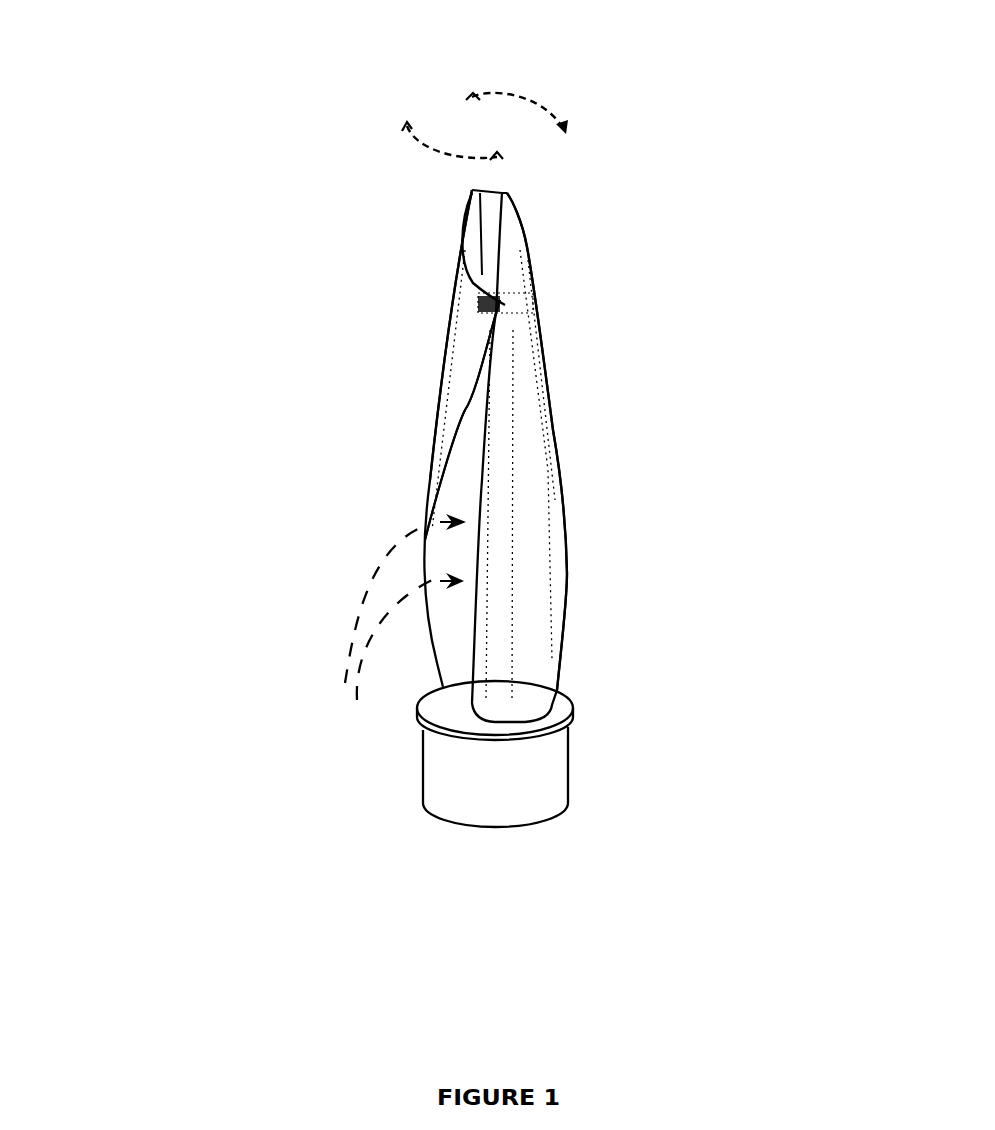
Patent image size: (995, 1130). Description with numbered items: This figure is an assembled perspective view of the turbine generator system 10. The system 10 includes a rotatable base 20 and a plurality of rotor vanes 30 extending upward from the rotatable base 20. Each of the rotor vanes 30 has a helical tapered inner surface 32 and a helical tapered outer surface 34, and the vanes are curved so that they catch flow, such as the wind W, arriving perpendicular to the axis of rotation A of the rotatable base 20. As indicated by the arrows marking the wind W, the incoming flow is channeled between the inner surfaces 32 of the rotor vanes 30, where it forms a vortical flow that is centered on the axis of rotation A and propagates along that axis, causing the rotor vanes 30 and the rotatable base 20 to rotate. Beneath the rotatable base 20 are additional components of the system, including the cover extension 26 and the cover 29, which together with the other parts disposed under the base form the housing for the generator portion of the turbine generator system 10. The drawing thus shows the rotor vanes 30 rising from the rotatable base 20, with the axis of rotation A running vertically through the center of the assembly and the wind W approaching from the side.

The turbine generator system 10 is at (416, 453).
The rotatable base 20 is at (448, 710).
The cover extension 26 is at (458, 733).
The cover 29 is at (502, 800).
The rotor vanes 30 is at (468, 323).
The helical tapered inner surface 32 is at (478, 190).
The helical tapered outer surface 34 is at (465, 410).
The axis of rotation A is at (485, 126).
The wind W is at (393, 618).